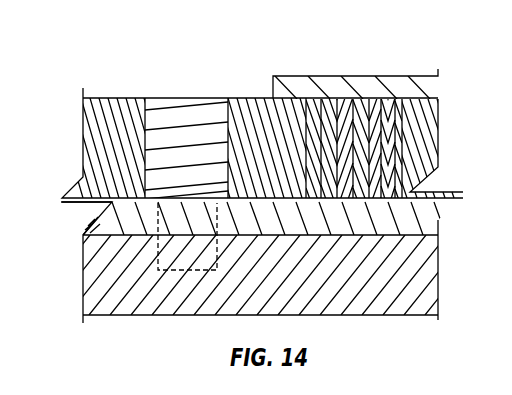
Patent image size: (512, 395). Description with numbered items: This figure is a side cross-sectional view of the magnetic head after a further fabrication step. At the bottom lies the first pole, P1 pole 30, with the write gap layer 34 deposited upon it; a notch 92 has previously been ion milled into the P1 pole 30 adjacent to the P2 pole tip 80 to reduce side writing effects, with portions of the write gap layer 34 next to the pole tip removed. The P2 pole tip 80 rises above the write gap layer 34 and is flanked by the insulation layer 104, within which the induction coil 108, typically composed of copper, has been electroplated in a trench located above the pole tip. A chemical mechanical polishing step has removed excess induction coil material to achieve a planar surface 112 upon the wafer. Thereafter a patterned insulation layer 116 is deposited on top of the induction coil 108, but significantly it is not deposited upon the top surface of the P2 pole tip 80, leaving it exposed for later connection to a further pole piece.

The first pole (P1) 30 is at (403, 285).
The write gap layer 34 is at (82, 237).
The P2 pole tip 80 is at (192, 107).
The notch 92 is at (176, 270).
The insulation layer 104 is at (100, 140).
The induction coil 108 is at (315, 98).
The planar surface 112 is at (255, 98).
The patterned insulation layer 116 is at (342, 99).